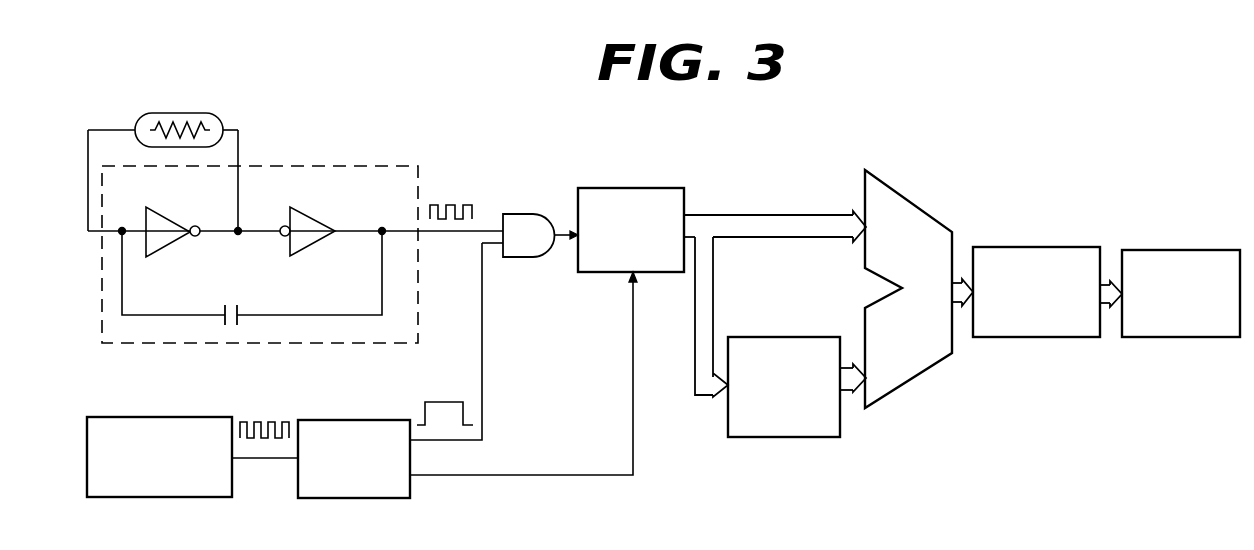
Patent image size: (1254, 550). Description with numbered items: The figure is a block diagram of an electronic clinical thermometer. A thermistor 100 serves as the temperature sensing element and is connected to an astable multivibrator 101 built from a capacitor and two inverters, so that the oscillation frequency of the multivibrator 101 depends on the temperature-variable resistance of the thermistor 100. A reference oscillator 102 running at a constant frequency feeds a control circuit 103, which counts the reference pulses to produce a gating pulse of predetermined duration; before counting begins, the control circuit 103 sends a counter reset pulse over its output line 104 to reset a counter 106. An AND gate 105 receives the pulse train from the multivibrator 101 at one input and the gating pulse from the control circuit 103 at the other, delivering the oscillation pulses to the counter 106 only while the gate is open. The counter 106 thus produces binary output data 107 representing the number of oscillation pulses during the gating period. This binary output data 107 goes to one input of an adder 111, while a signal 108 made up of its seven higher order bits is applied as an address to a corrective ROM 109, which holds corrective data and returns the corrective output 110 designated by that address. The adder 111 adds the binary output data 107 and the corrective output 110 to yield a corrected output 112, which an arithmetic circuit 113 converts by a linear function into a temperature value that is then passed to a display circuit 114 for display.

The thermistor 100 is at (209, 113).
The astable multivibrator 101 is at (388, 166).
The reference oscillator 102 is at (188, 418).
The control circuit 103 is at (353, 420).
The output line 104 is at (548, 475).
The AND gate 105 is at (530, 214).
The counter 106 is at (667, 188).
The binary output data 107 is at (760, 215).
The signal 108 is at (694, 332).
The corrective ROM 109 is at (766, 337).
The corrective output 110 is at (848, 393).
The adder 111 is at (928, 222).
The corrected output 112 is at (962, 306).
The arithmetic circuit 113 is at (1024, 257).
The display circuit 114 is at (1165, 337).